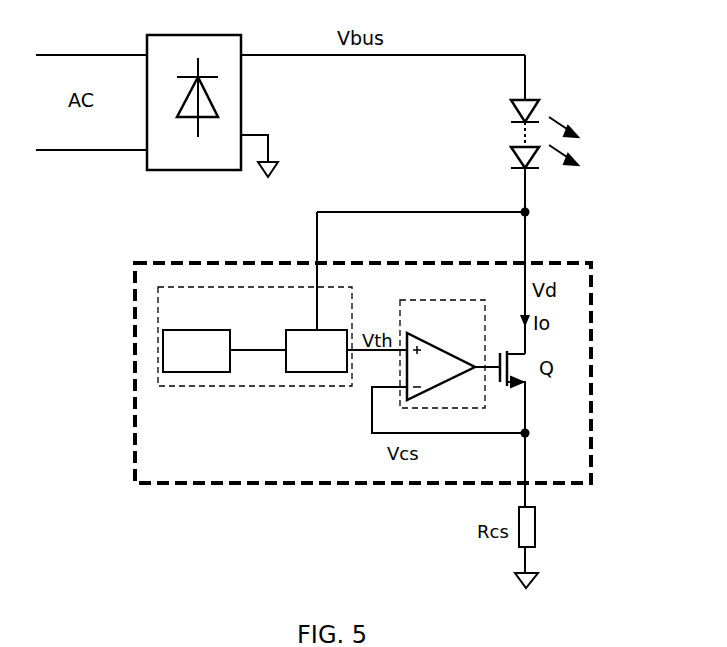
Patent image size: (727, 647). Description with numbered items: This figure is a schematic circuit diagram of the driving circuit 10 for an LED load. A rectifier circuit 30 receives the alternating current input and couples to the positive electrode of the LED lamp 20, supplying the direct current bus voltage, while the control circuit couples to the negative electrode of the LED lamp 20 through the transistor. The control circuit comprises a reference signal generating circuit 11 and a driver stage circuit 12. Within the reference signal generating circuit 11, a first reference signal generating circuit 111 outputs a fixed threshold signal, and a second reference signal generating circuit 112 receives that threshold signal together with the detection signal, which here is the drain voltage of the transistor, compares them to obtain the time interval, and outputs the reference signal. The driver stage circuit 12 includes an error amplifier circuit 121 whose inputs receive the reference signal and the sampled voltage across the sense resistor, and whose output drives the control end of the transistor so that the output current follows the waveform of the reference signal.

The driving circuit 10 is at (593, 311).
The reference signal generating circuit 11 is at (255, 353).
The first reference signal generating circuit 111 is at (196, 351).
The second reference signal generating circuit 112 is at (316, 351).
The driver stage circuit 12 is at (442, 339).
The error amplifier circuit 121 is at (459, 327).
The LED lamp 20 is at (540, 100).
The rectifier circuit 30 is at (195, 35).